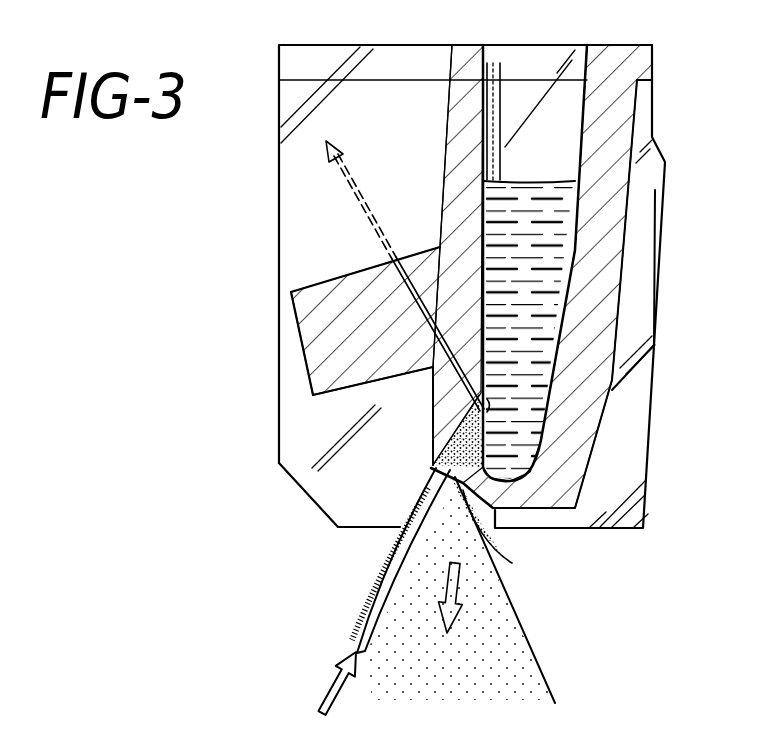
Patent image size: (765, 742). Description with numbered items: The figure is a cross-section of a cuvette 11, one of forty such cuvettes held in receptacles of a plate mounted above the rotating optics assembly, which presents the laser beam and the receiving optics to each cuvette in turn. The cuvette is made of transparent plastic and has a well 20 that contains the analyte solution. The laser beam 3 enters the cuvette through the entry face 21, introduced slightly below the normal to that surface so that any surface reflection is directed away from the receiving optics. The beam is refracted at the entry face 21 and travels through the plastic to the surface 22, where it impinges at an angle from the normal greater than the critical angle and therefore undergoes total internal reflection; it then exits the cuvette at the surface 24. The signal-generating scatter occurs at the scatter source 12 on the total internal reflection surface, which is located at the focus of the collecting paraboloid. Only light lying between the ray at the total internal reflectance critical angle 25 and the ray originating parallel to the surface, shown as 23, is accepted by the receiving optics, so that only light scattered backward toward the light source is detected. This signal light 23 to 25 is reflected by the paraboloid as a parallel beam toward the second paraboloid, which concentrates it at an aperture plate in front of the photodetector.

The laser beam 3 is at (357, 648).
The cuvette 11 is at (248, 400).
The scatter source 12 is at (506, 407).
The well 20 is at (503, 150).
The entry face 21 is at (512, 563).
The total internal reflection surface 22 is at (483, 314).
The signal light ray parallel to surface 23 is at (543, 667).
The exit surface 24 is at (331, 290).
The total internal reflectance critical angle ray 25 is at (371, 590).